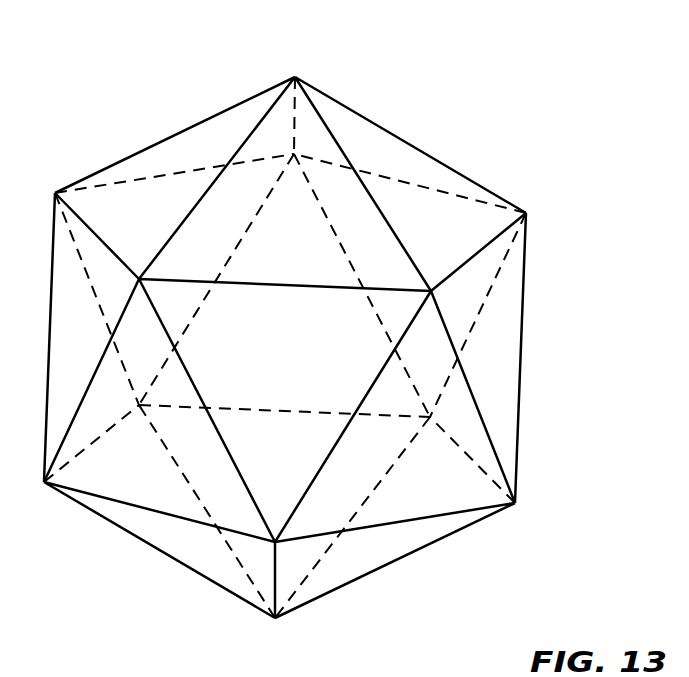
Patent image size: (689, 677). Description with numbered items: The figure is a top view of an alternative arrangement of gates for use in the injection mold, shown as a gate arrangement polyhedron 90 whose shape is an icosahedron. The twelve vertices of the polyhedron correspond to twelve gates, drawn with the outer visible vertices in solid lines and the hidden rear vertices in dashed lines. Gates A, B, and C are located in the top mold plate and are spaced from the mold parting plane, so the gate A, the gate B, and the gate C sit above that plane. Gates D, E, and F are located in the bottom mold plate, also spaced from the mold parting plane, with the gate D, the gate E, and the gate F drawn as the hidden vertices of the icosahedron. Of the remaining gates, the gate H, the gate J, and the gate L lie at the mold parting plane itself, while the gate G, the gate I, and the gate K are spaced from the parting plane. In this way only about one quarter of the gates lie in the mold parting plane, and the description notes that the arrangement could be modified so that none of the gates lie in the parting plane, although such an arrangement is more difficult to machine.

The gate arrangement polyhedron 90 is at (542, 95).
The gate A is at (431, 291).
The gate B is at (275, 542).
The gate C is at (139, 279).
The gate D is at (293, 153).
The gate E is at (430, 417).
The gate F is at (139, 405).
The gate G is at (526, 213).
The gate H is at (515, 503).
The gate I is at (275, 618).
The gate J is at (44, 482).
The gate K is at (55, 192).
The gate L is at (295, 76).